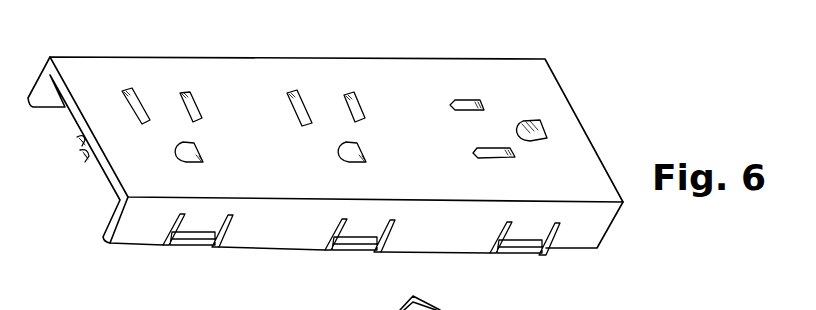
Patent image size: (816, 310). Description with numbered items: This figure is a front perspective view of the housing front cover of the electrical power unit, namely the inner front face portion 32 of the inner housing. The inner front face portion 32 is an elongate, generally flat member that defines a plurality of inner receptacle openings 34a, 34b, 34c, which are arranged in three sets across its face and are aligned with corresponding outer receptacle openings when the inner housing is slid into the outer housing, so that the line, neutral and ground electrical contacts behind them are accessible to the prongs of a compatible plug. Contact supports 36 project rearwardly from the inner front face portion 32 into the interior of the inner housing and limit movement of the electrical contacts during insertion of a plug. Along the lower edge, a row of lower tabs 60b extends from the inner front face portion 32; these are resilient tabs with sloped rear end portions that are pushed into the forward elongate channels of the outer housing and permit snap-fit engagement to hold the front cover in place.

The inner front face portion 32 is at (565, 85).
The inner receptacle opening 34a is at (455, 97).
The inner receptacle opening 34b is at (478, 147).
The inner receptacle opening 34c is at (548, 133).
The contact support 36 is at (77, 137).
The lower tab 60b is at (190, 246).